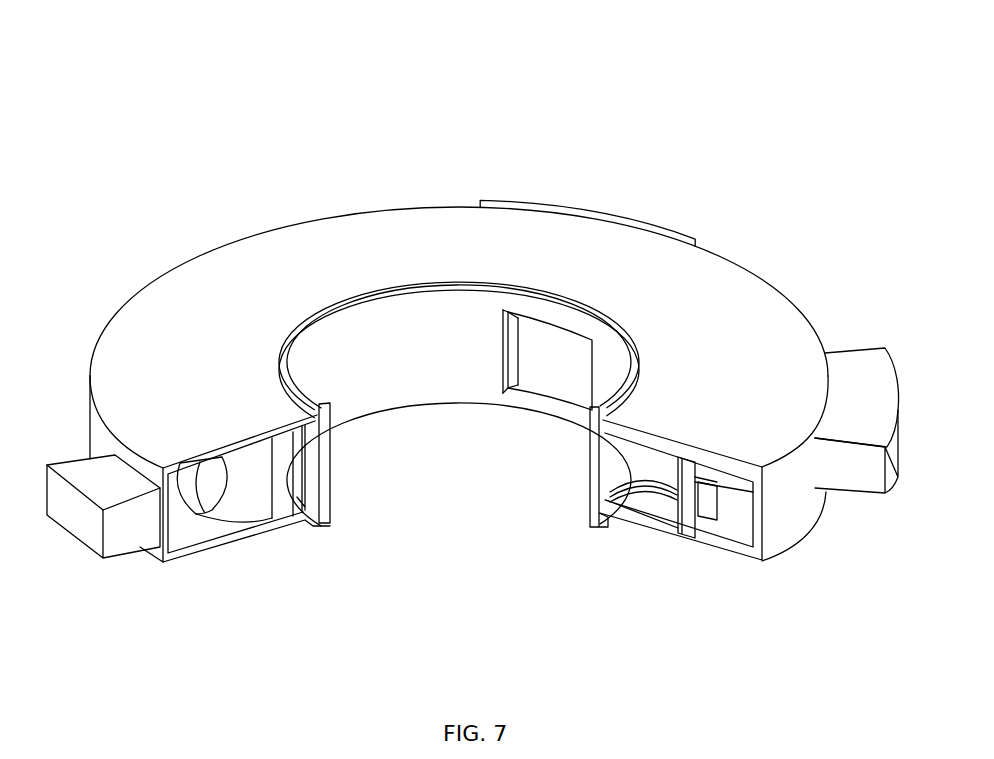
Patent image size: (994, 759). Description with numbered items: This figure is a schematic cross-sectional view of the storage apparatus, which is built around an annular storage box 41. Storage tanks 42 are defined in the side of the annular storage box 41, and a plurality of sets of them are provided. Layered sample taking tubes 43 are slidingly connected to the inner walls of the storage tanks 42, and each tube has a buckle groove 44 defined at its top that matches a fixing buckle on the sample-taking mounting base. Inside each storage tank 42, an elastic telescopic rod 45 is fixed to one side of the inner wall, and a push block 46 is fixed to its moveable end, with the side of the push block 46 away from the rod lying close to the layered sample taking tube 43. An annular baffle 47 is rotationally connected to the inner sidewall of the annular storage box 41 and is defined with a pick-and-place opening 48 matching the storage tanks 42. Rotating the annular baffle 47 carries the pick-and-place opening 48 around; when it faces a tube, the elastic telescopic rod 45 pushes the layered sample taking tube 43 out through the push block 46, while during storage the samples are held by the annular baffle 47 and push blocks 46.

The annular storage box 41 is at (430, 243).
The storage tank 42 is at (202, 525).
The layered sample taking tube 43 is at (622, 460).
The buckle groove 44 is at (680, 457).
The elastic telescopic rod 45 is at (737, 508).
The push block 46 is at (690, 508).
The annular baffle 47 is at (347, 345).
The pick-and-place opening 48 is at (547, 317).